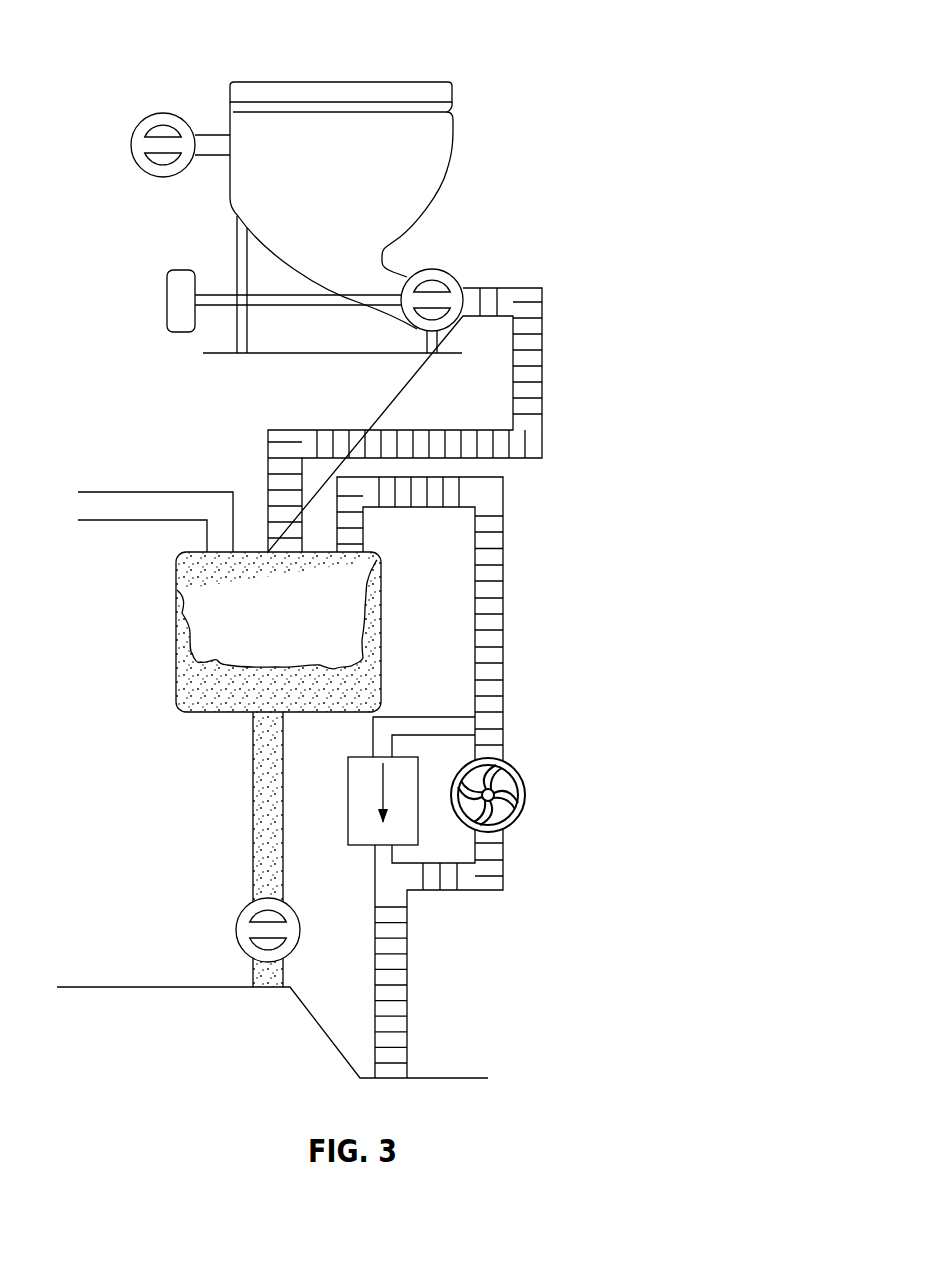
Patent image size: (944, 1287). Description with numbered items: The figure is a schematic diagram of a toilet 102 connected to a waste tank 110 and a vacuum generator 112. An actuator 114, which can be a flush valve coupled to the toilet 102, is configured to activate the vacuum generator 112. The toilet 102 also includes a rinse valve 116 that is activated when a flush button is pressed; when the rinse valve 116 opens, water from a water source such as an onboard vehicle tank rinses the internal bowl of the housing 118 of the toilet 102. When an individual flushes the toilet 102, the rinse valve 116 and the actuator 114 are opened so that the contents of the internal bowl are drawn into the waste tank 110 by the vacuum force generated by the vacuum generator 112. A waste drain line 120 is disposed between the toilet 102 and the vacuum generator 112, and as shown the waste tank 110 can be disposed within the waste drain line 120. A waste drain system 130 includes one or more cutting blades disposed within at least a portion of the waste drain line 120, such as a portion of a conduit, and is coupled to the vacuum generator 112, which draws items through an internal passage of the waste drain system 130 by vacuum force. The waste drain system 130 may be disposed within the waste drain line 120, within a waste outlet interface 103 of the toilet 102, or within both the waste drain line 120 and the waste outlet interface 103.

The toilet 102 is at (296, 46).
The rinse valve 116 is at (159, 100).
The housing 118 is at (440, 153).
The waste outlet interface 103 is at (407, 273).
The actuator 114 is at (449, 266).
The waste drain system 130 is at (737, 348).
The waste drain line 120 is at (569, 418).
The waste tank 110 is at (177, 580).
The vacuum generator 112 is at (507, 758).